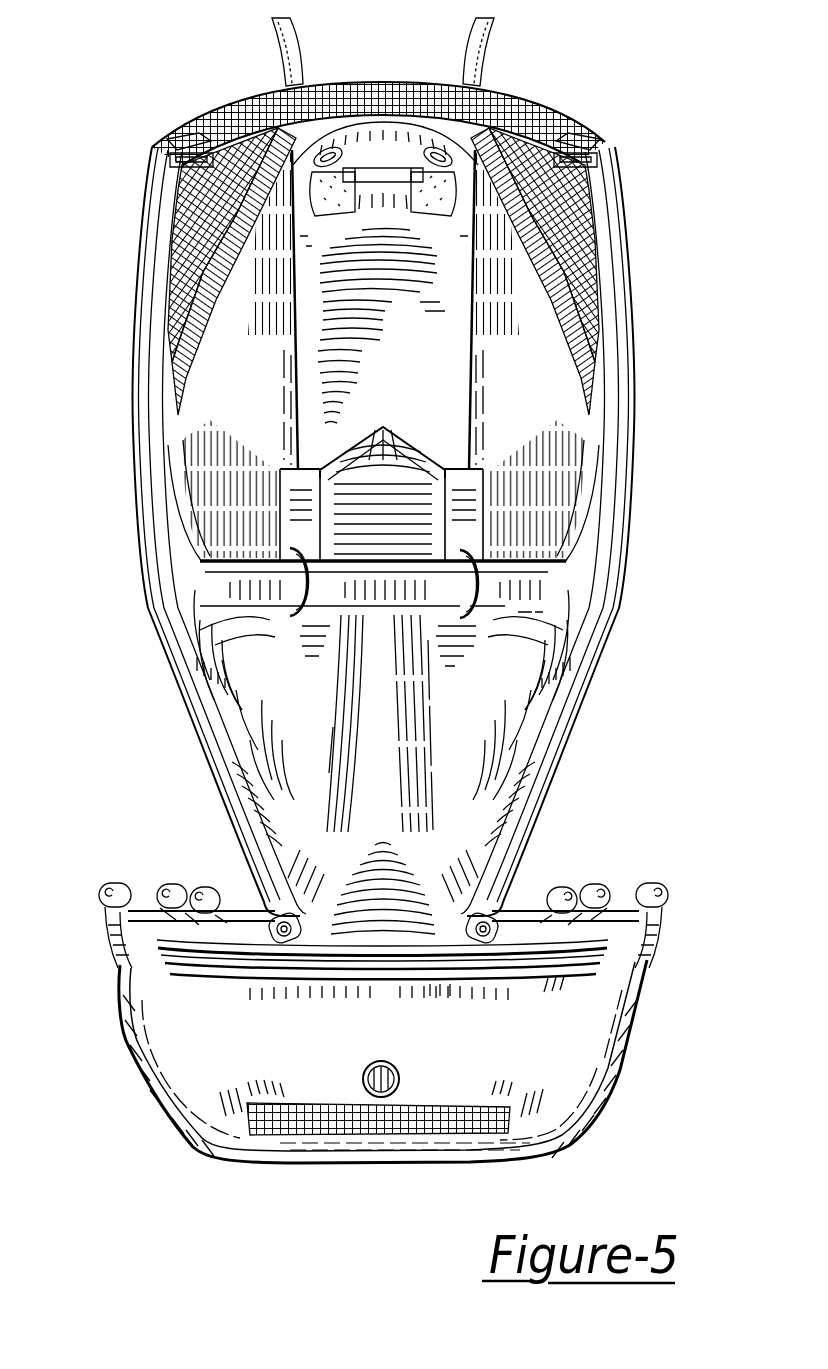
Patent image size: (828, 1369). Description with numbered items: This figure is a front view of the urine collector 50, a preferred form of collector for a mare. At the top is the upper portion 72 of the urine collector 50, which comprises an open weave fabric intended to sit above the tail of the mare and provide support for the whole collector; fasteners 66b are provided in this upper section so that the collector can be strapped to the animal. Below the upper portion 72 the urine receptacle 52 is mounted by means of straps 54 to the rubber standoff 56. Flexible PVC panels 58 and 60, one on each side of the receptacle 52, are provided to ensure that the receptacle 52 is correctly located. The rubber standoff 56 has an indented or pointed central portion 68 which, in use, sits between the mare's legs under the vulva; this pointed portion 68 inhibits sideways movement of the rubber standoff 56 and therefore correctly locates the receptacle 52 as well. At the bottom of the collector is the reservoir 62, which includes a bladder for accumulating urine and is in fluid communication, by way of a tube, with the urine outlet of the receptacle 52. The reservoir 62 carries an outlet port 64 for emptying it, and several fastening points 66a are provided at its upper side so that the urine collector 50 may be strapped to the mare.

The urine collector 50 is at (568, 783).
The urine receptacle 52 is at (380, 490).
The straps 54 is at (283, 587).
The rubber standoff 56 is at (495, 592).
The flexible PVC panel 58 is at (250, 393).
The flexible PVC panel 60 is at (550, 395).
The reservoir 62 is at (543, 1056).
The outlet port 64 is at (367, 1092).
The fastening points 66a is at (170, 882).
The fasteners 66b is at (183, 133).
The pointed central portion 68 is at (383, 588).
The upper portion 72 is at (242, 98).